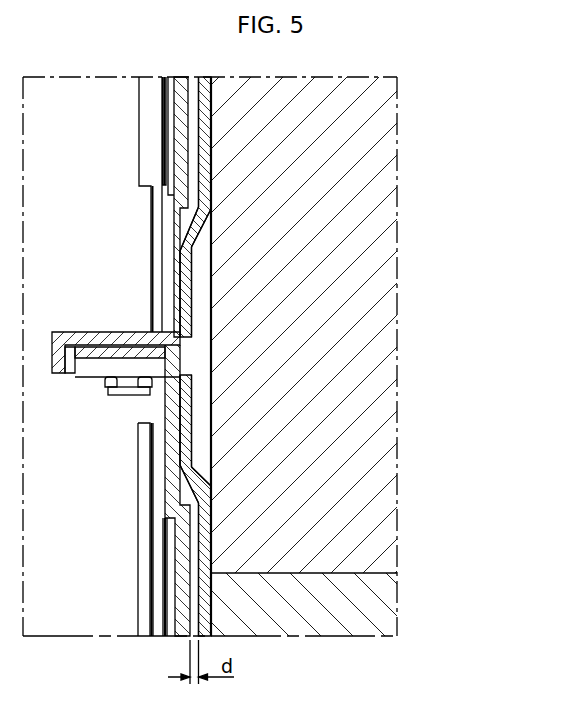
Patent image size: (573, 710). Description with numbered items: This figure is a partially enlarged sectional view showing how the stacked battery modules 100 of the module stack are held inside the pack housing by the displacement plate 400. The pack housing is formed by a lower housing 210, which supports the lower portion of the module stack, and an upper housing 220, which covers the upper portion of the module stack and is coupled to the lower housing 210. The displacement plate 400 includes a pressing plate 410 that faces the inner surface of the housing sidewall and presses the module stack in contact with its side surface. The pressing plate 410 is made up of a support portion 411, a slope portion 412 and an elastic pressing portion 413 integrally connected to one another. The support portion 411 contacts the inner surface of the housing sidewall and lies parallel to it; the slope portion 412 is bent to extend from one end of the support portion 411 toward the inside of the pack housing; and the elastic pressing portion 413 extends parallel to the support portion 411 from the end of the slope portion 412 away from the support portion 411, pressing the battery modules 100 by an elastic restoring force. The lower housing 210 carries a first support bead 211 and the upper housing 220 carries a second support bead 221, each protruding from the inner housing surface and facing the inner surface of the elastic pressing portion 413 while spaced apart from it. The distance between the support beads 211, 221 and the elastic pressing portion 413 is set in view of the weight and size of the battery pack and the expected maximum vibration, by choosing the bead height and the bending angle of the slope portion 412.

The battery module 100 is at (375, 337).
The displacement plate 400 is at (349, 356).
The pressing plate 410 is at (316, 356).
The support portion 411 is at (193, 292).
The slope portion 412 is at (208, 234).
The elastic pressing portion 413 is at (212, 165).
The upper housing 220 is at (98, 332).
The second support bead 221 is at (184, 147).
The first support bead 211 is at (184, 557).
The lower housing 210 is at (97, 362).